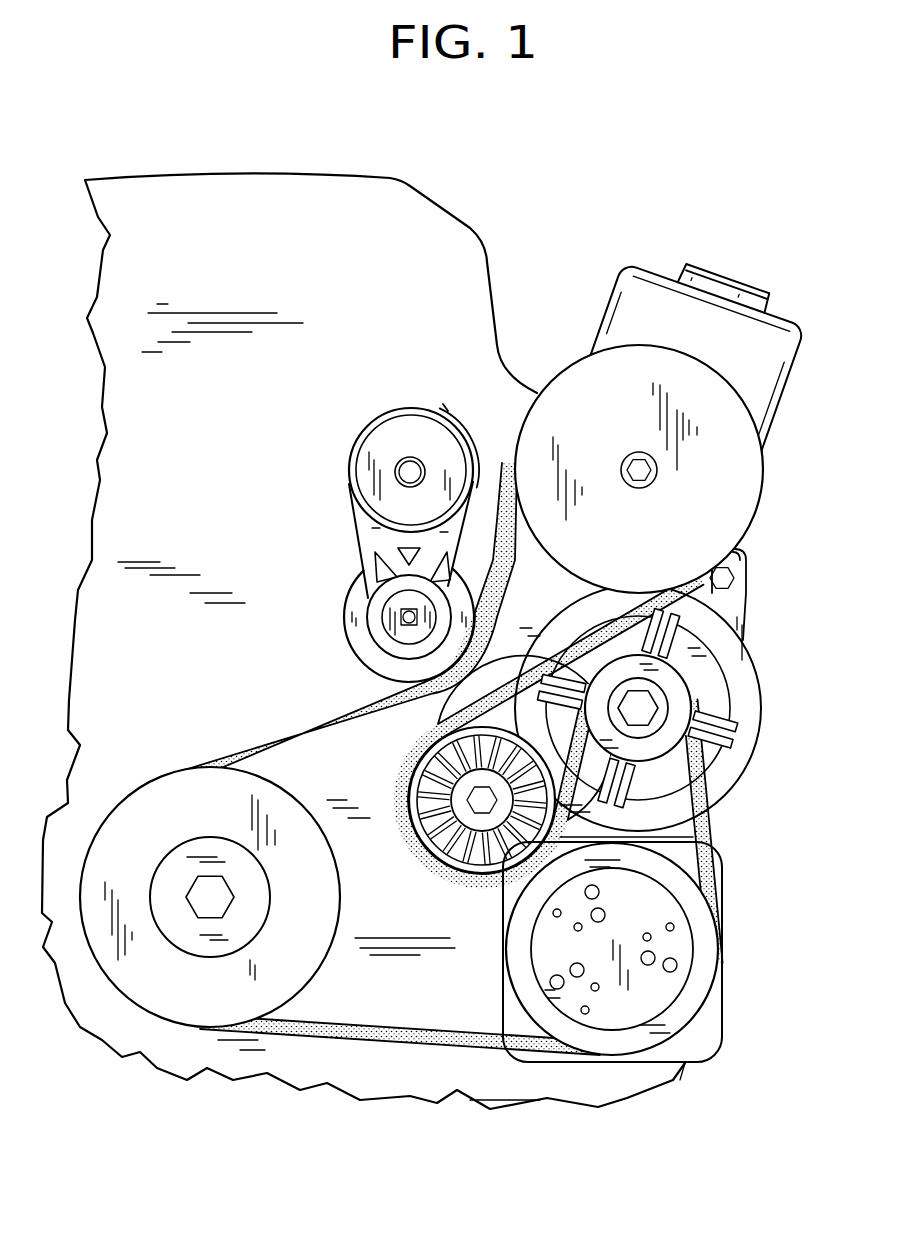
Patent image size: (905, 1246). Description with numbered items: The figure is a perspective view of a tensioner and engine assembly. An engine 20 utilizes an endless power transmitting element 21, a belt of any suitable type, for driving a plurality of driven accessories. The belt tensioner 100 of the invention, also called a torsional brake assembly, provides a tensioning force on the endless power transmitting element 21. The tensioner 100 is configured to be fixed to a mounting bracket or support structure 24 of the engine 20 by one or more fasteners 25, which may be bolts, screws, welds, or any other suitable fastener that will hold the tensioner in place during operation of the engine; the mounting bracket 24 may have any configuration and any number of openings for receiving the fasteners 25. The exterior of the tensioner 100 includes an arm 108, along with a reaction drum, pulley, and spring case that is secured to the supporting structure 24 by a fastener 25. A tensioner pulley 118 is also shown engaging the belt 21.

The engine 20 is at (427, 630).
The mounting bracket or support structure 24 is at (487, 257).
The fastener 25 is at (416, 472).
The belt tensioner 100 is at (369, 492).
The tensioner pulley 118 is at (352, 621).
The endless power transmitting element 21 is at (312, 722).
The arm 108 is at (499, 556).